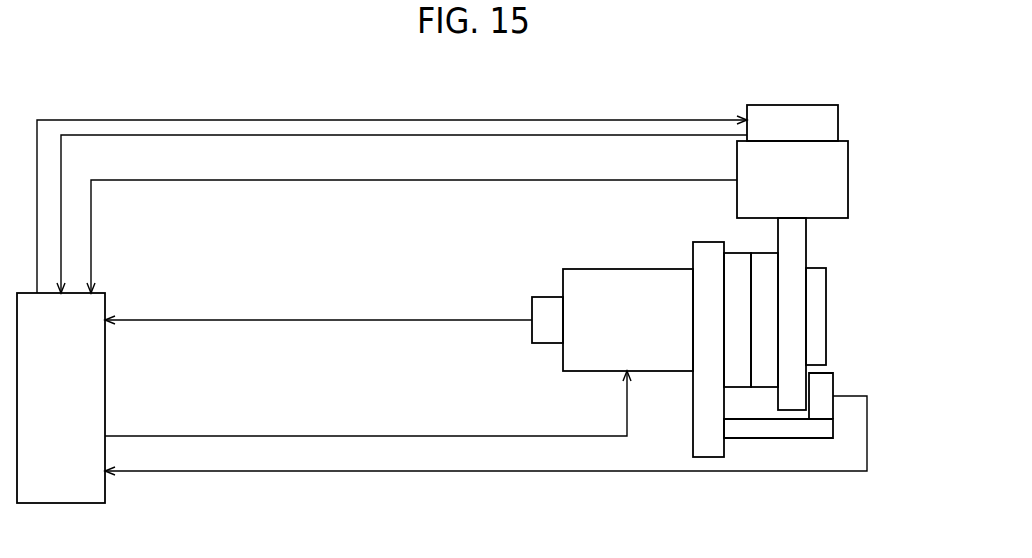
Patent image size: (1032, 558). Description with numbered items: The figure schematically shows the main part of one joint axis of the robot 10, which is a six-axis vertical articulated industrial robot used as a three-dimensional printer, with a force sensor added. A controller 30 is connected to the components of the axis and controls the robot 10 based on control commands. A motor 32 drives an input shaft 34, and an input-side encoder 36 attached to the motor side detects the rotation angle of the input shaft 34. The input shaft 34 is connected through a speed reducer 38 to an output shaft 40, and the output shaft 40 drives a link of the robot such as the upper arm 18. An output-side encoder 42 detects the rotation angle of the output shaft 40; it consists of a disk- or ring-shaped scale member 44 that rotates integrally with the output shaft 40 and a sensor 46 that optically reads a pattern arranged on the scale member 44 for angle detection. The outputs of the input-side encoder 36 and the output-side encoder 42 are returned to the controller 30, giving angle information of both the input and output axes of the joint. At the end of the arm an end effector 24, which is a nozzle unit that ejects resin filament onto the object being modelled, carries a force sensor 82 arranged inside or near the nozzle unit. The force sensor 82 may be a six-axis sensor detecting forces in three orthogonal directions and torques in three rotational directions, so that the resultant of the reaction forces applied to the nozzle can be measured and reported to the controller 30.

The robot 10 is at (449, 238).
The upper arm 18 is at (806, 250).
The end effector 24 is at (788, 112).
The controller 30 is at (105, 397).
The motor 32 is at (620, 277).
The input shaft 34 is at (738, 378).
The input-side encoder 36 is at (546, 305).
The speed reducer 38 is at (757, 394).
The output shaft 40 is at (769, 378).
The output-side encoder 42 is at (869, 343).
The scale member 44 is at (818, 329).
The sensor 46 is at (847, 383).
The force sensor 82 is at (848, 183).